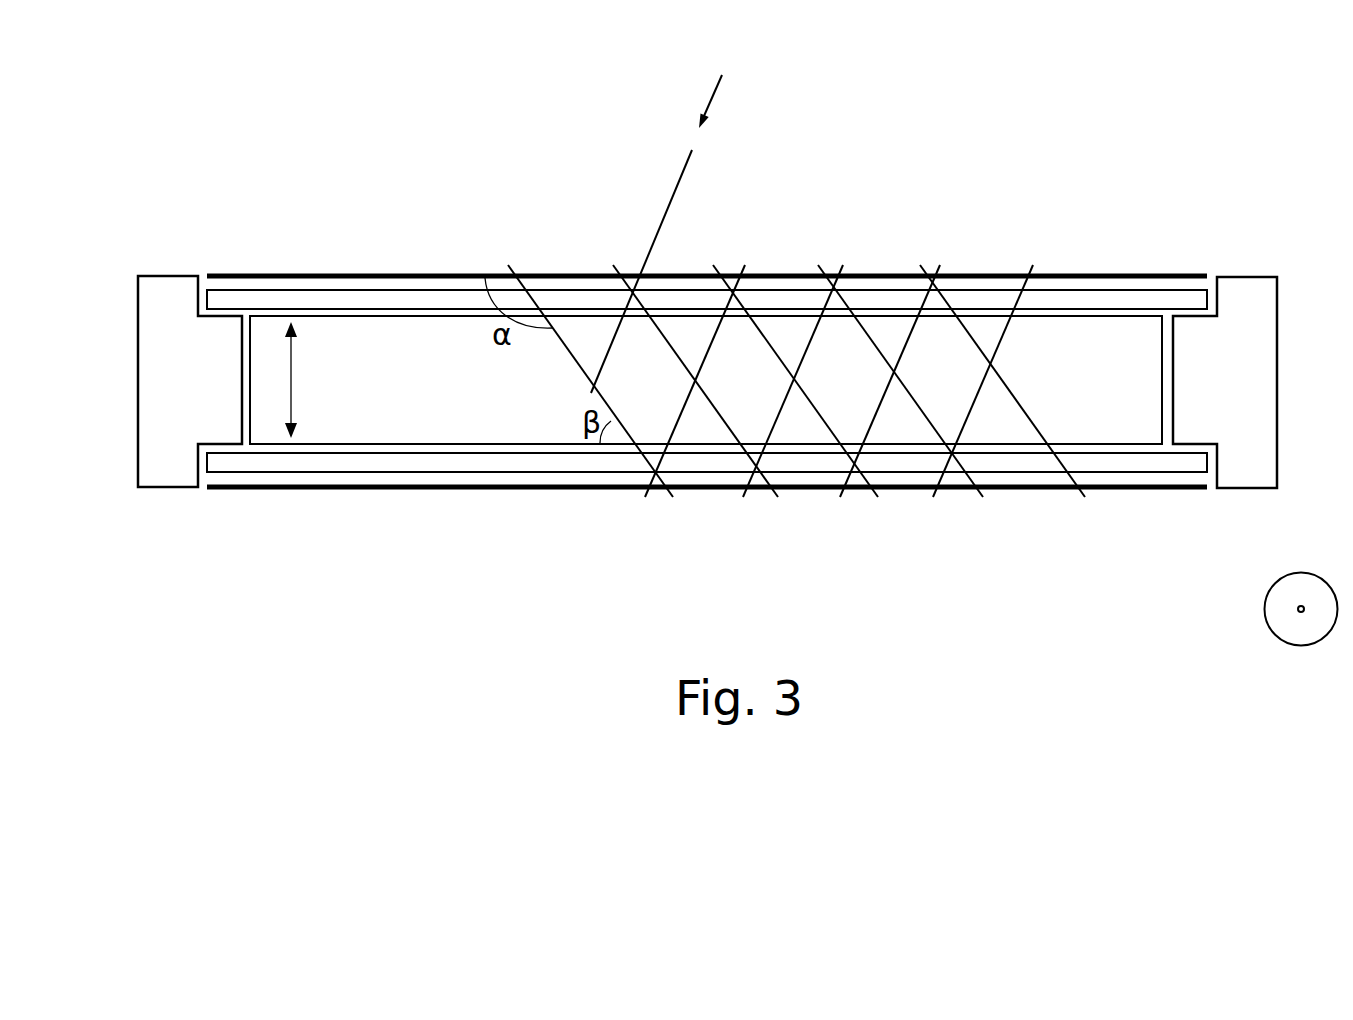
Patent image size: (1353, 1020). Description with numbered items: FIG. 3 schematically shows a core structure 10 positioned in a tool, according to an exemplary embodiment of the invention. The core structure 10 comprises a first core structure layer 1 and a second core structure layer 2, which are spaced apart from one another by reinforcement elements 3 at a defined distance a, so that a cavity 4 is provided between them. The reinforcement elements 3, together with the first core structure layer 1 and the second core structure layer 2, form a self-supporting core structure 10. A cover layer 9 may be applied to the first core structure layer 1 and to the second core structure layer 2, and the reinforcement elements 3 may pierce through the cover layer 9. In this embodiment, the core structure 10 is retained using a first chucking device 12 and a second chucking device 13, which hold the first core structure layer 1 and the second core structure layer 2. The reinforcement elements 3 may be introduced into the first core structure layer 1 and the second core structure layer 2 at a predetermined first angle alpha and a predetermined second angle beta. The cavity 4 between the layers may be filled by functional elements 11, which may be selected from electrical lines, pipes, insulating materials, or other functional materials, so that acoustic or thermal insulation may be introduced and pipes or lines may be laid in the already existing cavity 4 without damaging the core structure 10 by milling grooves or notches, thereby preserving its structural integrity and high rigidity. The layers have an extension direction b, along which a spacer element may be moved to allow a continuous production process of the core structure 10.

The first core structure layer 1 is at (1125, 302).
The second core structure layer 2 is at (433, 465).
The reinforcement element 3 is at (673, 195).
The cavity 4 is at (382, 352).
The cover layer 9 is at (302, 273).
The core structure 10 is at (341, 138).
The functional element 11 is at (947, 405).
The first chucking device 12 is at (182, 368).
The second chucking device 13 is at (1250, 352).
The defined distance a is at (309, 380).
The extension direction b is at (1284, 609).